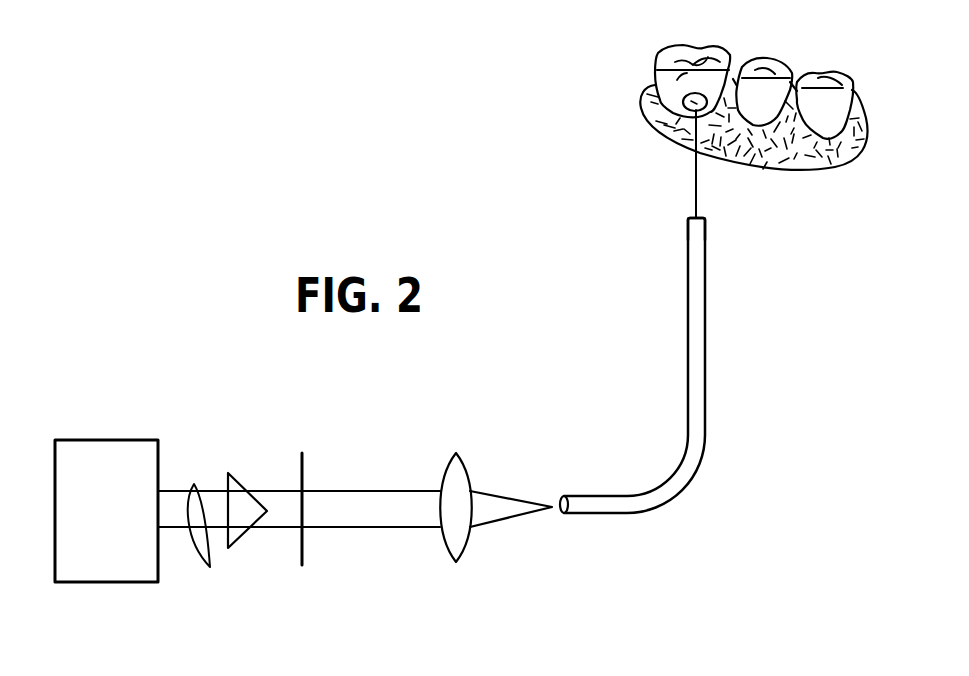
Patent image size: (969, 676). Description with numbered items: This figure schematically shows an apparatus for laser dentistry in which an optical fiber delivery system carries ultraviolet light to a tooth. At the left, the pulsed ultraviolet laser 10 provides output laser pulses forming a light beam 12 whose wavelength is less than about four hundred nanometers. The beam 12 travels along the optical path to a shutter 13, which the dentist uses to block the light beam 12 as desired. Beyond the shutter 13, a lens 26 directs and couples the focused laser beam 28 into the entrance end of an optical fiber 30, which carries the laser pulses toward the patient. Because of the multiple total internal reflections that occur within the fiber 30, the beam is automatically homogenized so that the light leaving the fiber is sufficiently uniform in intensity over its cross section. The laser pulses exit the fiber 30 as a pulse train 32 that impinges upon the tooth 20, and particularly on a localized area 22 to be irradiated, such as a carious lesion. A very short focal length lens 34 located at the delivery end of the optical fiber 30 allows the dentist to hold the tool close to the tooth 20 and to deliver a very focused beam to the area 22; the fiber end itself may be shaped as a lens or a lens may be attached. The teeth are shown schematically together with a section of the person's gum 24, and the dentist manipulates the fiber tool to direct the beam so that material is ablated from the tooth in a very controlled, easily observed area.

The laser 10 is at (120, 575).
The laser beam 12 is at (210, 567).
The shutter 13 is at (297, 548).
The tooth 20 is at (670, 53).
The localized area 22 is at (684, 108).
The gum 24 is at (820, 163).
The lens 26 is at (463, 468).
The focused laser beam 28 is at (520, 495).
The optical fiber 30 is at (690, 458).
The pulse train 32 is at (693, 198).
The very short focal length lens 34 is at (703, 210).